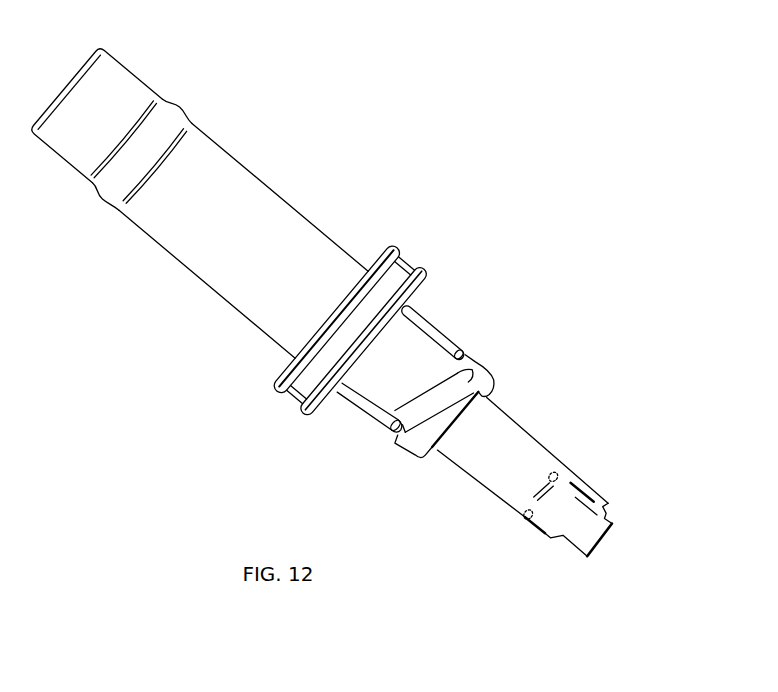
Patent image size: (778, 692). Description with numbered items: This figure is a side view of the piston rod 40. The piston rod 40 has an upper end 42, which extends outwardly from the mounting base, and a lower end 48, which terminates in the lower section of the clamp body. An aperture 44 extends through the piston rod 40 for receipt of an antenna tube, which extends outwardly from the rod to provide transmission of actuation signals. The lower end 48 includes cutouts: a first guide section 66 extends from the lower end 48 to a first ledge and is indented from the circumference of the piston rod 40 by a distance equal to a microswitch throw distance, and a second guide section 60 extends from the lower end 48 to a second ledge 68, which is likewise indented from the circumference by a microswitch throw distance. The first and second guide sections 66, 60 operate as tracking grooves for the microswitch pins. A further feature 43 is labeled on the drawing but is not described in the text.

The piston rod 40 is at (162, 280).
The upper end 42 is at (112, 50).
The connector clip 43 is at (450, 387).
The aperture 44 is at (623, 523).
The lower end 48 is at (588, 557).
The second guide section 60 is at (565, 508).
The first guide section 66 is at (612, 515).
The second ledge 68 is at (533, 498).